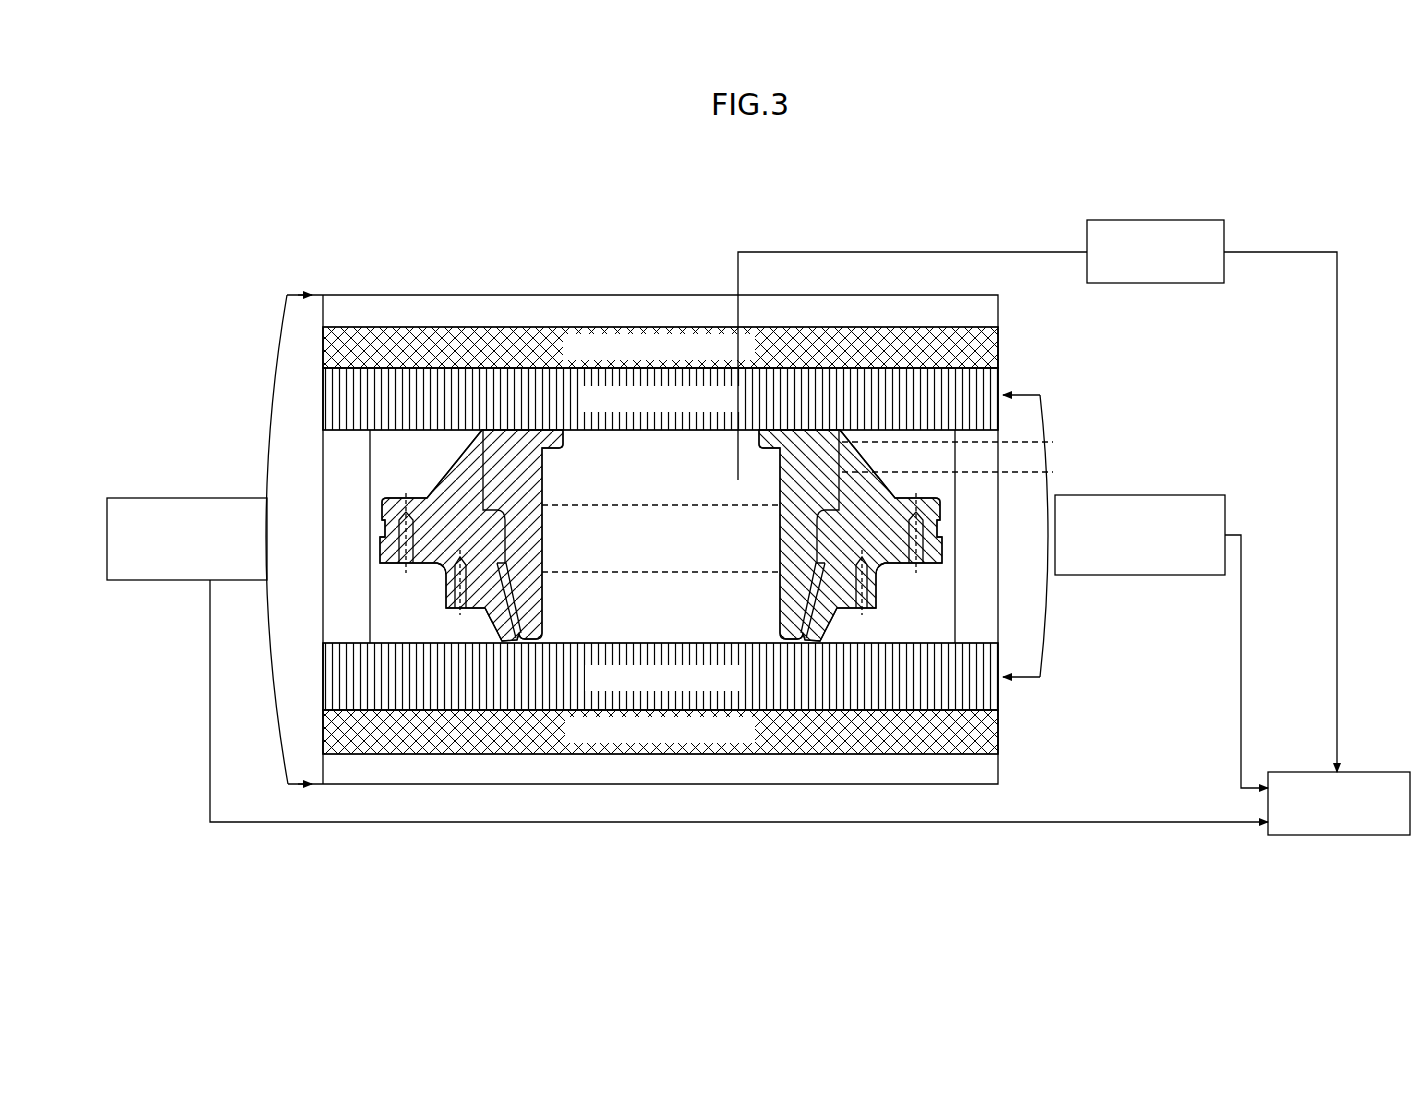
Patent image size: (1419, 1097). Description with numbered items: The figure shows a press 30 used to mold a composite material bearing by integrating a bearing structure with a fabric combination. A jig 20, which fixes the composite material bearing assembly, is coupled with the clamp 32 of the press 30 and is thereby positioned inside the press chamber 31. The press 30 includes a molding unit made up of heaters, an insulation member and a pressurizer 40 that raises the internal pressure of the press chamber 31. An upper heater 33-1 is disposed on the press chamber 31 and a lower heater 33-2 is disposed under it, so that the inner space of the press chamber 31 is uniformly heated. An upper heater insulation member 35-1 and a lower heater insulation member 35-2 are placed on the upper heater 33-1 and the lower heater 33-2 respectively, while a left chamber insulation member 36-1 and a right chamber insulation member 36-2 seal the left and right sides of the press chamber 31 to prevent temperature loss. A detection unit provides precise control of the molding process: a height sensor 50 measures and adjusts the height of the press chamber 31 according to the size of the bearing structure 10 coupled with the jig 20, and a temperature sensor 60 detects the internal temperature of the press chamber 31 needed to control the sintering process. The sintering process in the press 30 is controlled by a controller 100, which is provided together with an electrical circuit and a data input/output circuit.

The bearing structure 10 is at (733, 547).
The jig 20 is at (530, 588).
The press 30 is at (833, 238).
The press chamber 31 is at (592, 474).
The clamp 32 is at (456, 490).
The upper heater 33-1 is at (507, 395).
The lower heater 33-2 is at (472, 672).
The upper heater insulation member 35-1 is at (563, 330).
The lower heater insulation member 35-2 is at (552, 753).
The left chamber insulation member 36-1 is at (348, 502).
The right chamber insulation member 36-2 is at (980, 572).
The pressurizer 40 is at (1155, 218).
The height sensor 50 is at (188, 582).
The temperature sensor 60 is at (1105, 495).
The controller 100 is at (1372, 770).